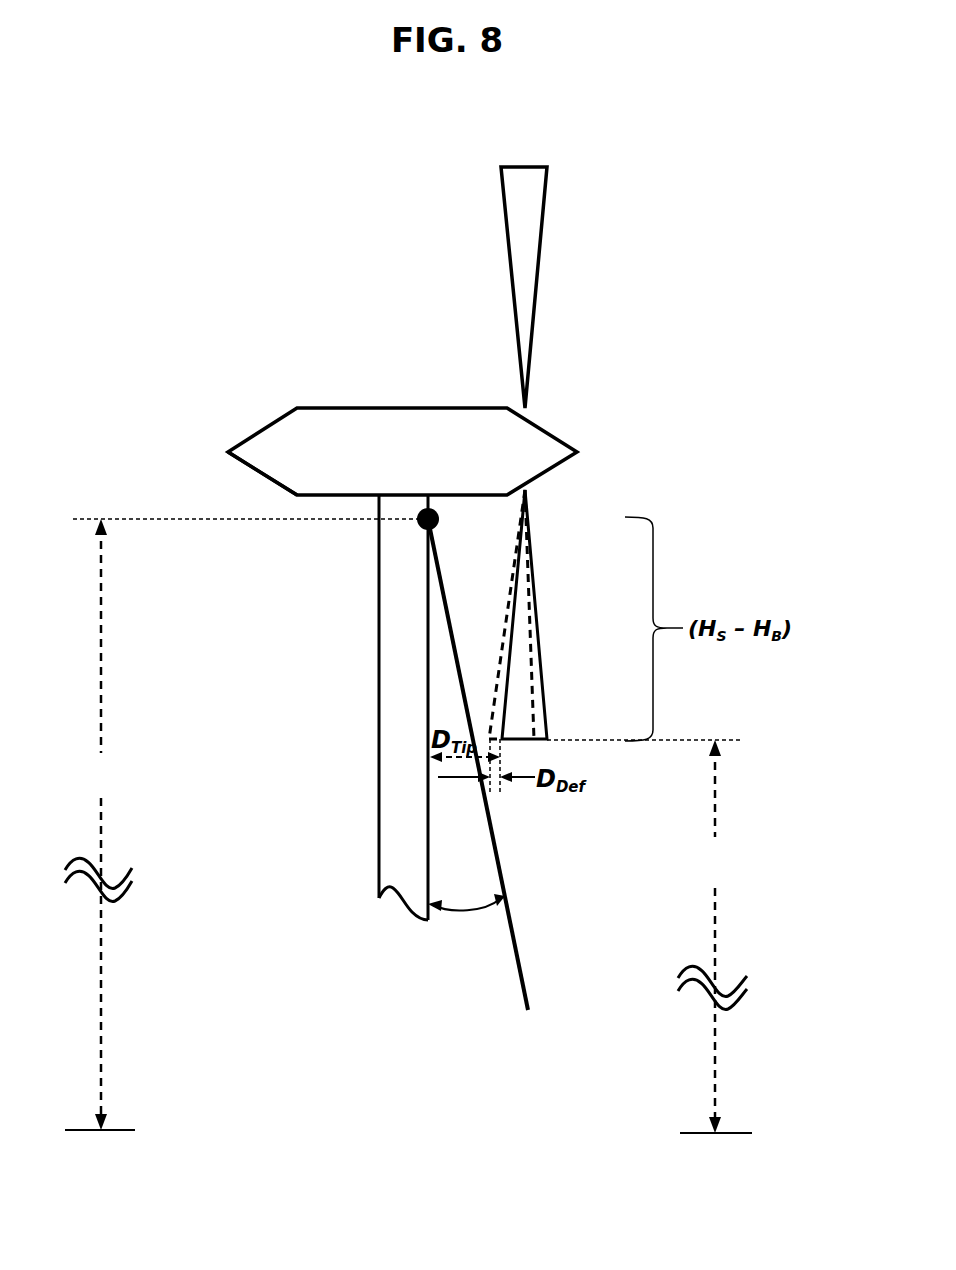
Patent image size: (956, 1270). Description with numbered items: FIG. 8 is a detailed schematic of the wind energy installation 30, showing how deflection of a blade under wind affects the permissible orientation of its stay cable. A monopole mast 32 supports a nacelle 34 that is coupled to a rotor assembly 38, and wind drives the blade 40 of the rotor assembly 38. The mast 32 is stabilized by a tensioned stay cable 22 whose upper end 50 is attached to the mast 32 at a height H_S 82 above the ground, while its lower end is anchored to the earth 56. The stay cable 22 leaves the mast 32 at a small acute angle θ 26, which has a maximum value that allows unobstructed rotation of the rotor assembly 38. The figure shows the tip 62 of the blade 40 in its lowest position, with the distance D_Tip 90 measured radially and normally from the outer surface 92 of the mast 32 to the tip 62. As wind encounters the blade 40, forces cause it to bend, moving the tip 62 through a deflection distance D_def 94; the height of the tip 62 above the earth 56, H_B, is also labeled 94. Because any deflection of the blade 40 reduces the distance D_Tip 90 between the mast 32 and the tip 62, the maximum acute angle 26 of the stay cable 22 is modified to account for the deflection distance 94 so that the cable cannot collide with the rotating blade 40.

The wind energy installation 30 is at (163, 298).
The blade 40 is at (547, 198).
The rotor assembly 38 is at (558, 438).
The nacelle 34 is at (253, 470).
The mast 32 is at (379, 622).
The distance D_Tip 90 is at (452, 728).
The upper end of stay cable 50 is at (424, 523).
The stay cable 22 is at (523, 973).
The tip of blade 62 is at (517, 738).
The deflection distance D_def 94 is at (547, 790).
The height H_S 82 is at (85, 767).
The earth 56 is at (742, 1131).
The acute angle θ 26 is at (450, 940).
The outer surface of mast 92 is at (430, 878).